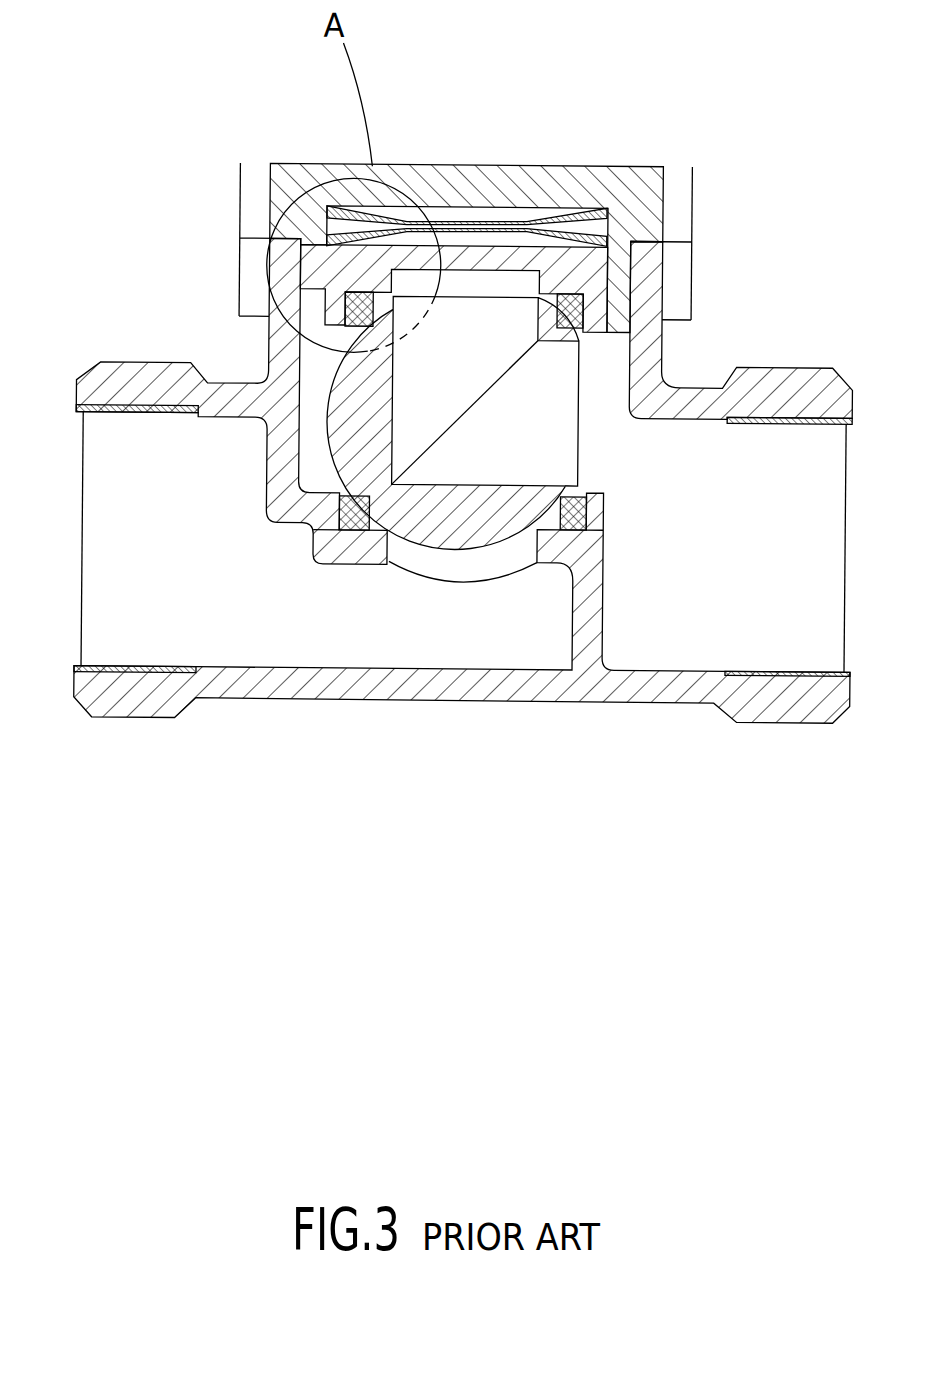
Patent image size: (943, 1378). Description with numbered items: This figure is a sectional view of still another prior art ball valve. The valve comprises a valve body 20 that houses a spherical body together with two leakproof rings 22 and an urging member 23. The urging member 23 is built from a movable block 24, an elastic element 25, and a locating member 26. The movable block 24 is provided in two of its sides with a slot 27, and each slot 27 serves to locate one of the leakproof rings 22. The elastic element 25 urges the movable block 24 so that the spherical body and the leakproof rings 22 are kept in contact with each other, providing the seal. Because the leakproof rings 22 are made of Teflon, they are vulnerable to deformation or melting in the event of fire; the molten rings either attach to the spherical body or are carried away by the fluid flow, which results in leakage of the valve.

The valve body 20 is at (405, 688).
The leakproof rings 22 is at (576, 305).
The urging member 23 is at (466, 197).
The movable block 24 is at (358, 254).
The elastic element 25 is at (568, 205).
The locating member 26 is at (490, 166).
The slot 27 is at (416, 235).